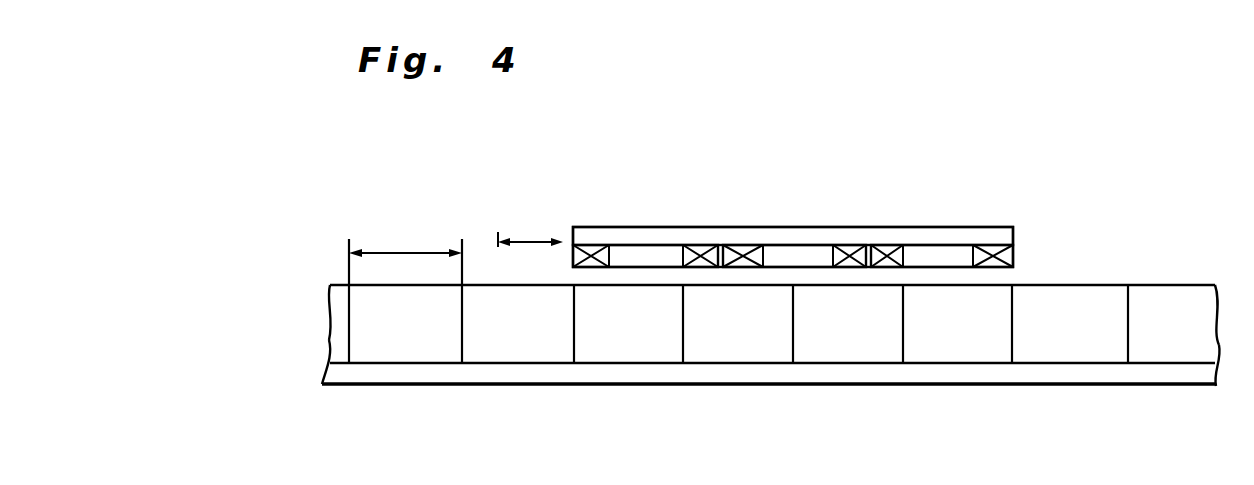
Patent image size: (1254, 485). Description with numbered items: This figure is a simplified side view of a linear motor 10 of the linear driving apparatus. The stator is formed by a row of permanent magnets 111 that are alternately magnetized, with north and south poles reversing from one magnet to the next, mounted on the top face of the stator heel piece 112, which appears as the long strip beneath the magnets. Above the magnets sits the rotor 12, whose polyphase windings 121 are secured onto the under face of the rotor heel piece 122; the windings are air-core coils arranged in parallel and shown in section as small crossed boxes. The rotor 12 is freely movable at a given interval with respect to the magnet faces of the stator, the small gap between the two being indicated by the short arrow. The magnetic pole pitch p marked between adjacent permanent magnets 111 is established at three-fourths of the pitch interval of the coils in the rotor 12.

The linear motor 10 is at (497, 206).
The rotor 12 is at (1135, 142).
The polyphase windings 121 is at (1015, 257).
The rotor heel piece 122 is at (1015, 229).
The permanent magnets 111 is at (333, 317).
The stator heel piece 112 is at (326, 373).